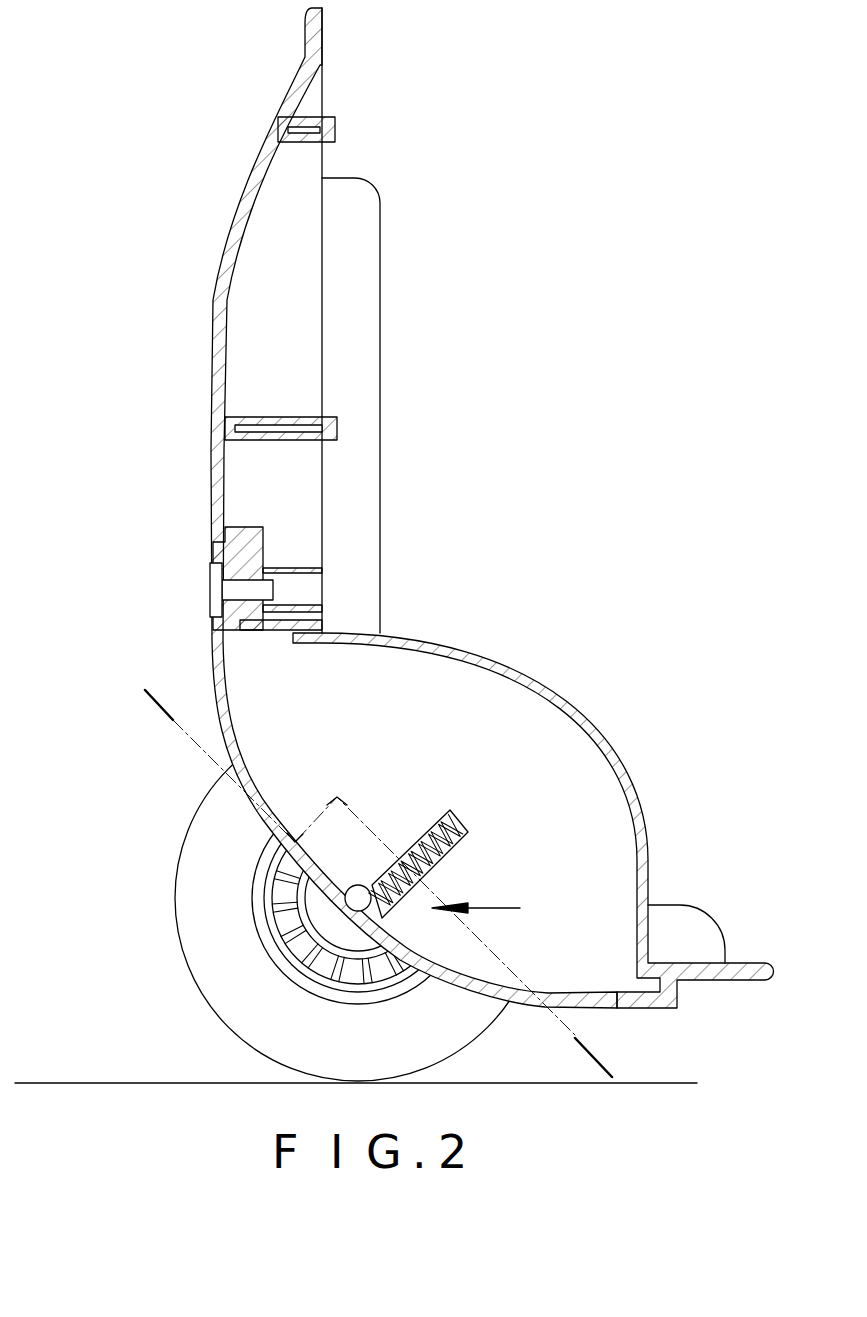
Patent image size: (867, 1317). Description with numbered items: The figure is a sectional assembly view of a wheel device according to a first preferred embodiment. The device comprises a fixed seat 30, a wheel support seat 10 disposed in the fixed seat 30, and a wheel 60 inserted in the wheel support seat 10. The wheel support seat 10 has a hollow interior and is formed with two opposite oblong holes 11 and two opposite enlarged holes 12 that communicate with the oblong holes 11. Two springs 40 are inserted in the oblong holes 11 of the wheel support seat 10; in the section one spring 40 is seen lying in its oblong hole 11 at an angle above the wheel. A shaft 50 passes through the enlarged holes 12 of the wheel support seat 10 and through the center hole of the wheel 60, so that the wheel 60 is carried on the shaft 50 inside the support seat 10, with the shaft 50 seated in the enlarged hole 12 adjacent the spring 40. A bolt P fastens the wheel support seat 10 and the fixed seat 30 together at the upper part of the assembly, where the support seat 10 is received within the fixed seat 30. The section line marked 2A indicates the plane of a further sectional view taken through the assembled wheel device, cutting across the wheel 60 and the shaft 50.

The wheel support seat 10 is at (492, 653).
The oblong holes 11 is at (417, 838).
The enlarged holes 12 is at (354, 893).
The fixed seat 30 is at (218, 327).
The springs 40 is at (445, 815).
The shaft 50 is at (362, 885).
The wheel 60 is at (198, 939).
The bolt P is at (210, 590).
The section line 2A- 2A is at (618, 1057).